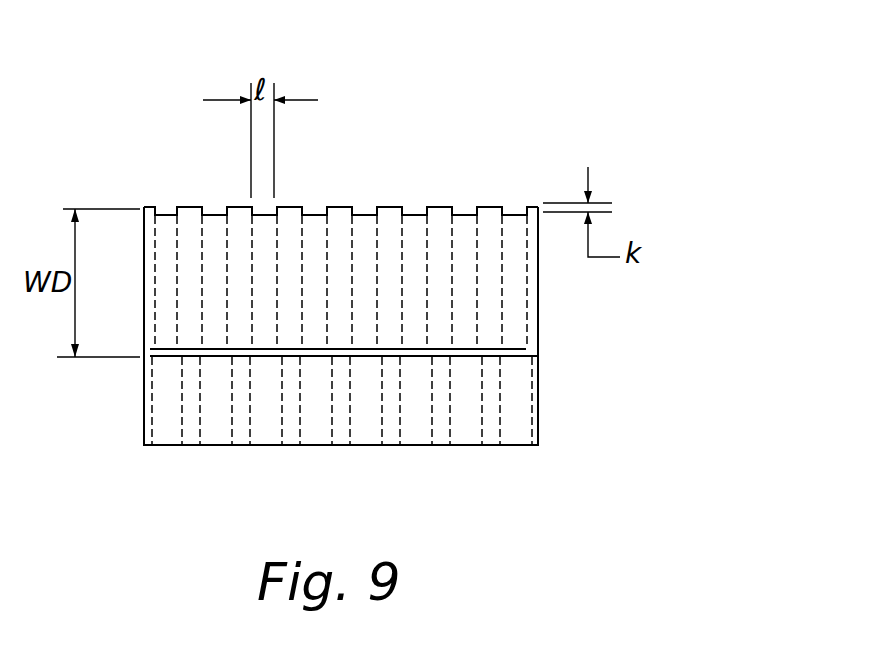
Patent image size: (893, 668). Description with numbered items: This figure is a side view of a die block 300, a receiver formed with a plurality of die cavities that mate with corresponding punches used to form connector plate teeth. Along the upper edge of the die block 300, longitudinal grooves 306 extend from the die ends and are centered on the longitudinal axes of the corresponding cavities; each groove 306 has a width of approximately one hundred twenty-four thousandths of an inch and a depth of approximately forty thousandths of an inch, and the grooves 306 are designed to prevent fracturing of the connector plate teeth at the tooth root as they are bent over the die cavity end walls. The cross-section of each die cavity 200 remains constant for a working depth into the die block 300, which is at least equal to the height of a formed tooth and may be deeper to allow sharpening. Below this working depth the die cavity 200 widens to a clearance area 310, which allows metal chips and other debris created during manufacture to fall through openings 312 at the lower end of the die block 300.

The die cavity 200 is at (160, 207).
The die block 300 is at (447, 115).
The longitudinal groove 306 is at (217, 207).
The clearance area 310 is at (160, 402).
The opening 312 is at (168, 446).